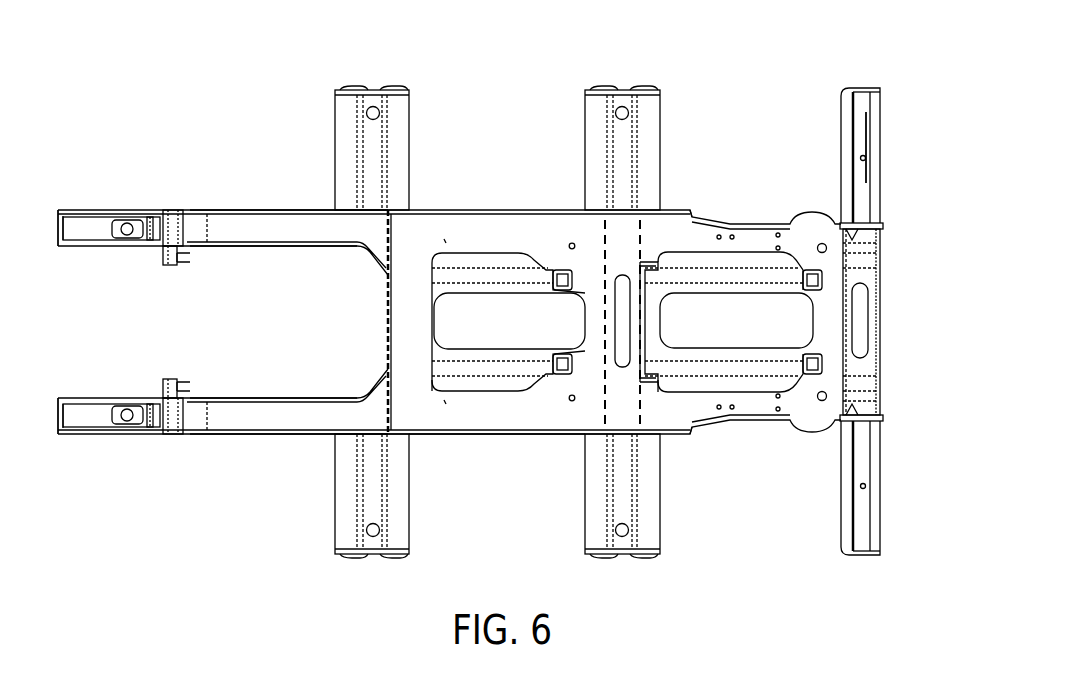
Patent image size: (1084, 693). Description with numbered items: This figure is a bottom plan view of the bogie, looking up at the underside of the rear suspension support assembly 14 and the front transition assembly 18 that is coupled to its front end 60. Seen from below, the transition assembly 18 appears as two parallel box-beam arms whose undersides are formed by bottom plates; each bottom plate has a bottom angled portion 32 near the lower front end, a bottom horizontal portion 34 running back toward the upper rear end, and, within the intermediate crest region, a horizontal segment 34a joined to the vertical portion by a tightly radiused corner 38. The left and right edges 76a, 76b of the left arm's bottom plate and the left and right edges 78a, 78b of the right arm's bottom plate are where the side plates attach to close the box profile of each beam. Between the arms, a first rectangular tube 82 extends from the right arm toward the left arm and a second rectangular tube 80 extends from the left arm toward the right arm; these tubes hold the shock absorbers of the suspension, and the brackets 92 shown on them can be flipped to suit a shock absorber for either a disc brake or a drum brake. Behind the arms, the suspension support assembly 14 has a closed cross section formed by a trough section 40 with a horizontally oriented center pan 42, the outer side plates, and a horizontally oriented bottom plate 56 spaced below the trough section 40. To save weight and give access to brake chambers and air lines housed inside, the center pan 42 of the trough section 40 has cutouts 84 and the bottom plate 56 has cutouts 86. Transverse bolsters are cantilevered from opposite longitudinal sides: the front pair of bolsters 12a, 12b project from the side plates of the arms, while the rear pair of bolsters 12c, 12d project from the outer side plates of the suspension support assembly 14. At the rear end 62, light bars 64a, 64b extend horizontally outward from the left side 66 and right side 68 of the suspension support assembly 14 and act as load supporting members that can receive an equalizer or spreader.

The rear suspension support assembly 14 is at (860, 277).
The front transition assembly 18 is at (172, 130).
The bolster 12a is at (335, 142).
The bolster 12b is at (335, 502).
The bolster 12c is at (585, 142).
The bolster 12d is at (585, 500).
The bottom angled portion 32 is at (163, 210).
The bottom horizontal portion 34 is at (294, 232).
The horizontal segment 34a is at (195, 216).
The radiused corner 38 is at (177, 210).
The trough section 40 is at (890, 324).
The center pan 42 is at (655, 335).
The bottom plate 56 is at (488, 222).
The front end 60 is at (425, 443).
The rear end 62 is at (888, 228).
The light bar 64a is at (841, 158).
The light bar 64b is at (841, 497).
The left side 66 is at (706, 196).
The right side 68 is at (708, 452).
The left edge of bottom plate 76a is at (232, 210).
The right edge of bottom plate 76b is at (226, 246).
The left edge of bottom plate 78a is at (250, 397).
The right edge of bottom plate 78b is at (233, 436).
The second rectangular tube 80 is at (168, 266).
The first rectangular tube 82 is at (163, 380).
The cutouts 84 is at (496, 296).
The cutouts 86 is at (500, 386).
The brackets 92 is at (186, 263).